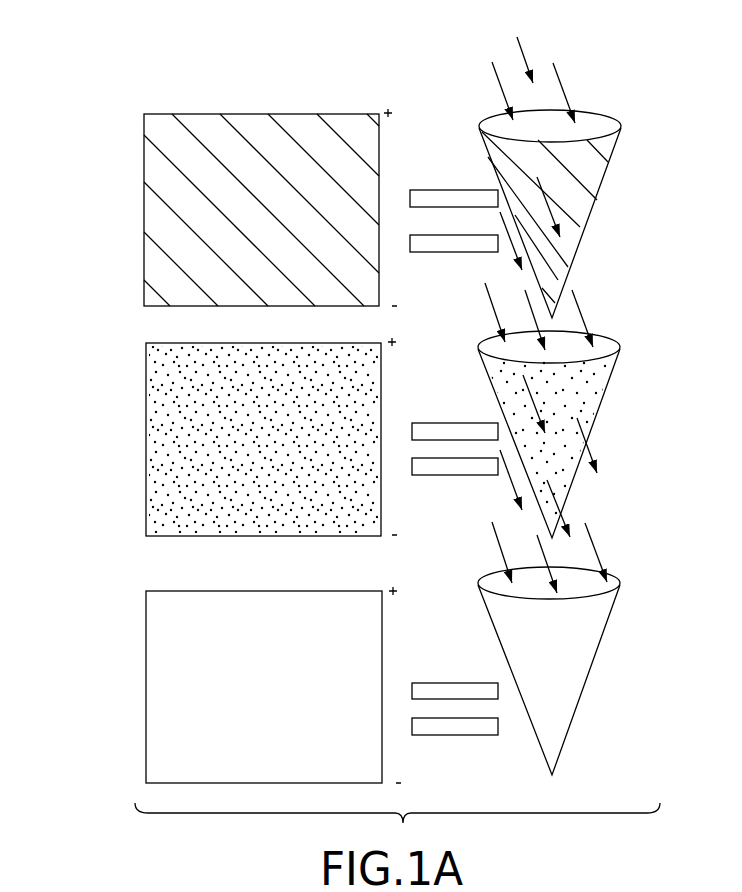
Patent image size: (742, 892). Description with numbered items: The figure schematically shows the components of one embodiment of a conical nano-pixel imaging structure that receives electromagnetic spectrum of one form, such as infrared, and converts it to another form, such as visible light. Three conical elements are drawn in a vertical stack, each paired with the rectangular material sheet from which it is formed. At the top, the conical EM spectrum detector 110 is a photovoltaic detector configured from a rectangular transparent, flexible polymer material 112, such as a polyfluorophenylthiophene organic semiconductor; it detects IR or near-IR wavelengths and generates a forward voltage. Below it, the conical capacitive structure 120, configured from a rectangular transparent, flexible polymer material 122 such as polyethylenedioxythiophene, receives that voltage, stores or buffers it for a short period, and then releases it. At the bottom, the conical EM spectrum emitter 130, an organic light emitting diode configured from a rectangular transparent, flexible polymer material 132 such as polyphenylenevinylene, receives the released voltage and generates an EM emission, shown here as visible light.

The EM spectrum detector 110 is at (597, 172).
The transparent flexible polymer material 112 is at (144, 207).
The capacitive structure 120 is at (592, 403).
The transparent flexible polymer material 122 is at (147, 418).
The EM spectrum emitter 130 is at (602, 613).
The transparent flexible polymer material 132 is at (148, 660).